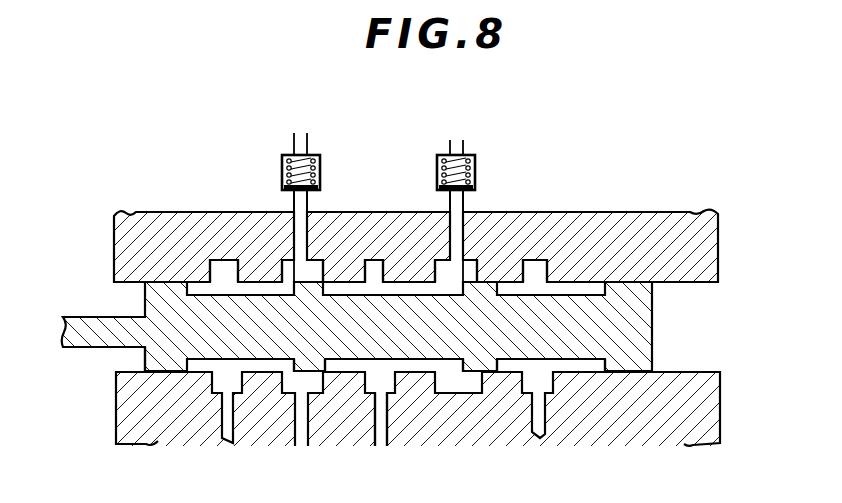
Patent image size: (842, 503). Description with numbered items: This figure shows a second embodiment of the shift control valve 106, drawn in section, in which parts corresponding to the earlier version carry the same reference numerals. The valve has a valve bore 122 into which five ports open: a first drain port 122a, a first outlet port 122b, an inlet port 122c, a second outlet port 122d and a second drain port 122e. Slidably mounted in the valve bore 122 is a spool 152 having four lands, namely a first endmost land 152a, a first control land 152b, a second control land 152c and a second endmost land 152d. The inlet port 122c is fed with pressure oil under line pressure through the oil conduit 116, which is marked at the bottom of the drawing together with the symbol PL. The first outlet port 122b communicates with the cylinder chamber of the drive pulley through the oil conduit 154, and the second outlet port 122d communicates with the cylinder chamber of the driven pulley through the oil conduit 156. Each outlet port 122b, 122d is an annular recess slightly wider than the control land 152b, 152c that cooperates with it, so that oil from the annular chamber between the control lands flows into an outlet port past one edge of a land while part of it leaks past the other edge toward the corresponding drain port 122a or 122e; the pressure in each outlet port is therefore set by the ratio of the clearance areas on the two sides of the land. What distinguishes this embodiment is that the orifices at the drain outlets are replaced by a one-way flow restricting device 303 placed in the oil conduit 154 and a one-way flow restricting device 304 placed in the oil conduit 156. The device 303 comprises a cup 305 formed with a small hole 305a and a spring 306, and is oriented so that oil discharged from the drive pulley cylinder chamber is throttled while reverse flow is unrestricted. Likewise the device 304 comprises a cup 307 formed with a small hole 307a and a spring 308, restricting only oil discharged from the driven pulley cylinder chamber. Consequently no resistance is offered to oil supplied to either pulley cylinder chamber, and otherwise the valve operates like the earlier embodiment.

The shift control valve 106 is at (549, 212).
The oil conduit 116 is at (390, 407).
The valve bore 122 is at (200, 286).
The first drain port 122a is at (222, 261).
The first outlet port 122b is at (287, 258).
The inlet port 122c is at (383, 258).
The second outlet port 122d is at (470, 258).
The second drain port 122e is at (540, 258).
The spool 152 is at (212, 346).
The first endmost land 152a is at (165, 357).
The first control land 152b is at (313, 353).
The second control land 152c is at (480, 353).
The second endmost land 152d is at (632, 353).
The oil conduit 154 is at (293, 146).
The oil conduit 156 is at (449, 146).
The one-way flow restricting device 303 is at (321, 164).
The one-way flow restricting device 304 is at (476, 158).
The cup 305 is at (320, 188).
The small hole 305a is at (293, 201).
The spring 306 is at (313, 155).
The cup 307 is at (475, 188).
The small hole 307a is at (440, 194).
The spring 308 is at (468, 155).
The parting line PL is at (383, 432).